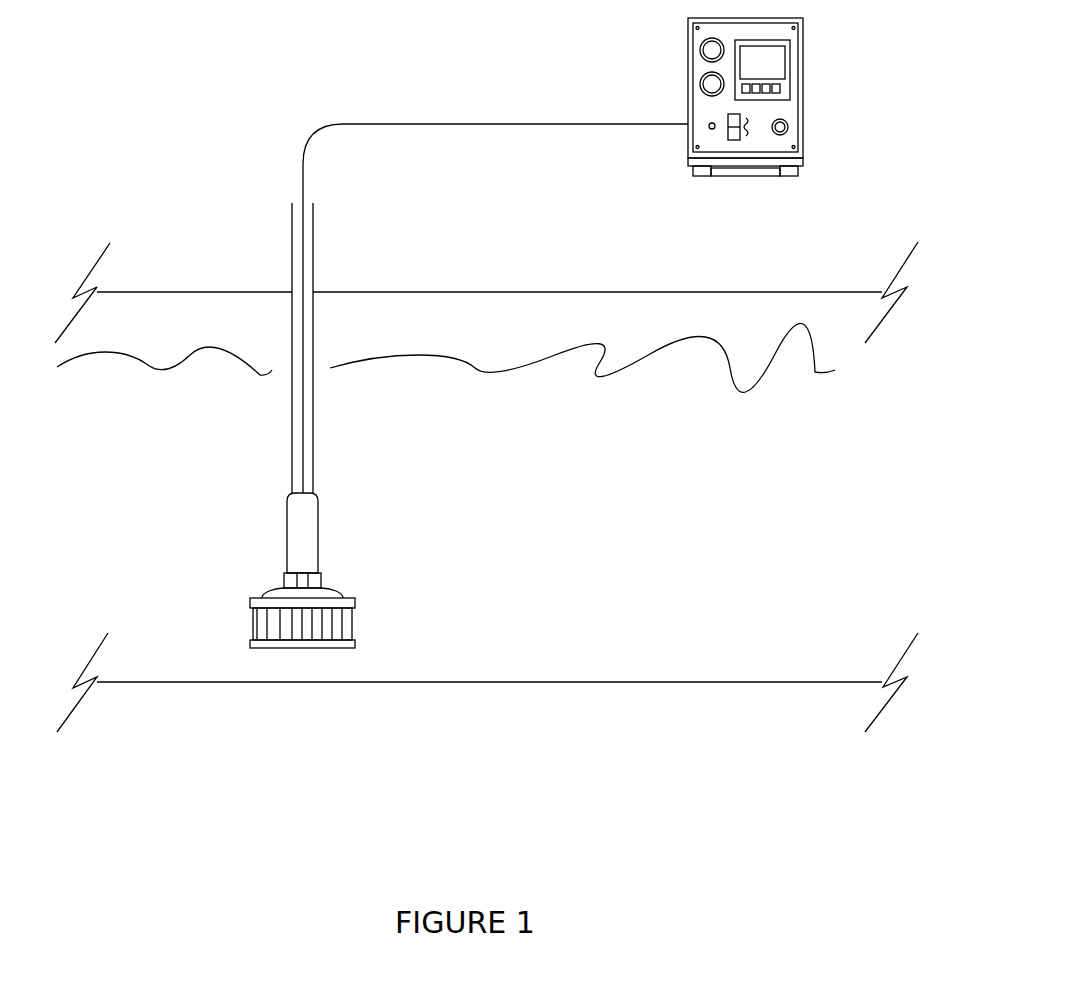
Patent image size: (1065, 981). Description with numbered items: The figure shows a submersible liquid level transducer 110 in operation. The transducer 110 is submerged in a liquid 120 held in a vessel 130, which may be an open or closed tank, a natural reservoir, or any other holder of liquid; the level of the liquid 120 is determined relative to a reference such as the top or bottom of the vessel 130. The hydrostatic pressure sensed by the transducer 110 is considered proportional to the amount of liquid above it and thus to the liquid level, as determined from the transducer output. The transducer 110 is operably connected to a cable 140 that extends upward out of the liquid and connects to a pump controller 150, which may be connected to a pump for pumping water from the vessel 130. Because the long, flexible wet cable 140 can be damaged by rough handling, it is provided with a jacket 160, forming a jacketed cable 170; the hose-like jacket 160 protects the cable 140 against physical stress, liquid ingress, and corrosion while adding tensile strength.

The submersible liquid level transducer 110 is at (355, 600).
The liquid 120 is at (805, 518).
The vessel 130 is at (490, 683).
The cable 140 is at (305, 453).
The pump controller 150 is at (806, 90).
The jacket 160 is at (316, 346).
The jacketed cable 170 is at (277, 422).